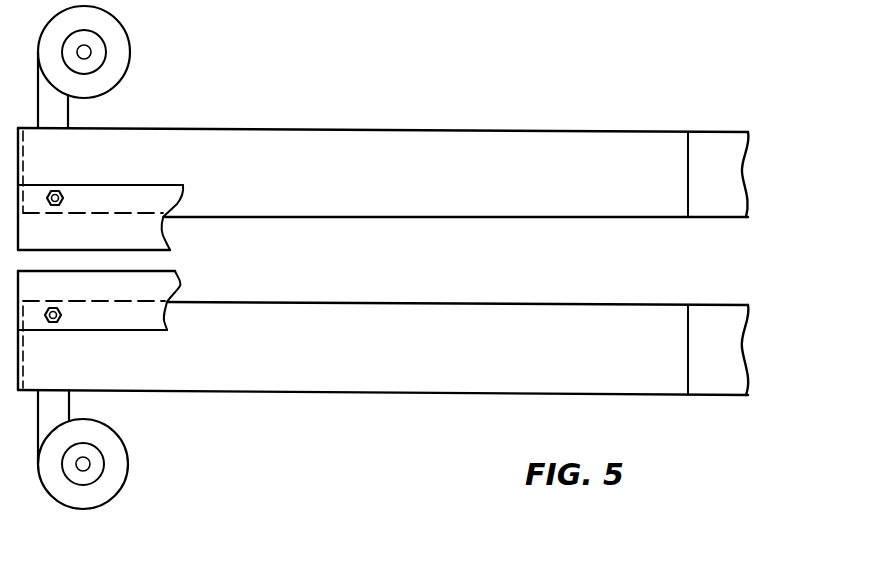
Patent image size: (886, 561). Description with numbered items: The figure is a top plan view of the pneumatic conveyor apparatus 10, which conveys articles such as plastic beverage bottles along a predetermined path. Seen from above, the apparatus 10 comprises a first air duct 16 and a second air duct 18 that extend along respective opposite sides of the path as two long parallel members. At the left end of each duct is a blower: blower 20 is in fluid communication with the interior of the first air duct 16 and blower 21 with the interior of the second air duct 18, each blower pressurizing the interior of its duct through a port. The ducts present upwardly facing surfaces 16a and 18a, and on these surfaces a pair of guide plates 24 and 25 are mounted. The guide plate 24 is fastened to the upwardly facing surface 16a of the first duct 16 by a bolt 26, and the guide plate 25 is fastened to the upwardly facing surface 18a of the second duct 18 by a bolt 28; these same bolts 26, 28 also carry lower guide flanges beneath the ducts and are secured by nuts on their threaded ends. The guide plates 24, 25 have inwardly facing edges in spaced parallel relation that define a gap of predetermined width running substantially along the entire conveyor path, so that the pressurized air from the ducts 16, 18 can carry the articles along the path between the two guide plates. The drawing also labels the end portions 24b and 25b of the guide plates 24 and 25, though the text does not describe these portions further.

The apparatus 10 is at (437, 82).
The first air duct 16 is at (263, 128).
The upwardly facing surface 16a is at (423, 177).
The second air duct 18 is at (267, 393).
The upwardly facing surface 18a is at (415, 350).
The blower 20 is at (130, 50).
The blower 21 is at (128, 462).
The guide plate 24 is at (165, 232).
The upper extension member end portion 24b is at (160, 195).
The guide plate 25 is at (180, 286).
The lower extension member end portion 25b is at (153, 318).
The bolt 26 is at (58, 192).
The bolt 28 is at (58, 320).